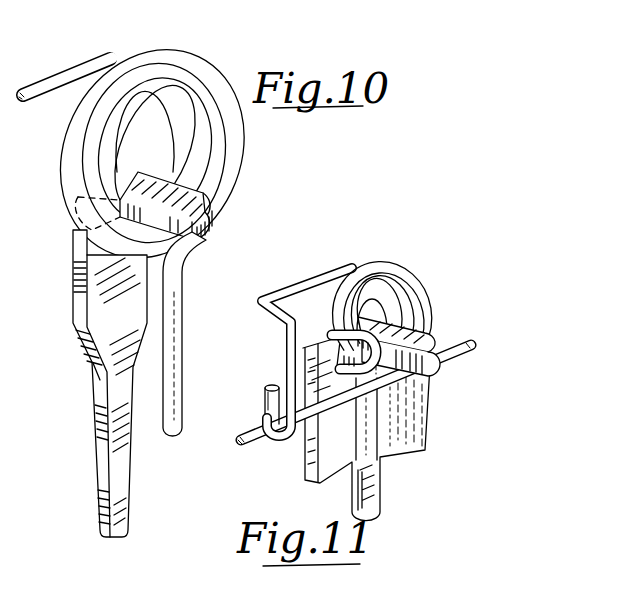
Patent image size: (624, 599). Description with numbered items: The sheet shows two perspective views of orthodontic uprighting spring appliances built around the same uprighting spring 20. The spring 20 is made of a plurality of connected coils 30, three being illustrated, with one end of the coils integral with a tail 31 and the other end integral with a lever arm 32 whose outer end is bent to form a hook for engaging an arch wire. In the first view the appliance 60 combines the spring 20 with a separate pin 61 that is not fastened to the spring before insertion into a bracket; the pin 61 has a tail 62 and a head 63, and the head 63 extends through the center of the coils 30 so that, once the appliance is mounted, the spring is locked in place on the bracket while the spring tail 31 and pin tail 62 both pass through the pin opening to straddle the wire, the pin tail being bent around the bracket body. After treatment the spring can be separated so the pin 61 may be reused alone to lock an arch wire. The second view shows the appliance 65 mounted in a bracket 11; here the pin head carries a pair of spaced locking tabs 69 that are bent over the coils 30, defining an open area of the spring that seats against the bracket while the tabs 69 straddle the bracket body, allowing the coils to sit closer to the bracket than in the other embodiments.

In FIG. 11, the mounting bracket 11 is at (302, 466).
In FIG. 10, the uprighting spring 20 is at (236, 135).
In FIG. 11, the uprighting spring 20 is at (424, 278).
In FIG. 10, the coils 30 is at (138, 53).
In FIG. 11, the coils 30 is at (383, 267).
In FIG. 10, the tail 31 is at (172, 316).
In FIG. 10, the lever arm 32 is at (47, 82).
In FIG. 10, the appliance 60 is at (203, 54).
In FIG. 10, the pin 61 is at (73, 318).
In FIG. 10, the tail 62 is at (100, 417).
In FIG. 10, the head 63 is at (202, 204).
In FIG. 11, the head 63 is at (399, 346).
In FIG. 11, the appliance 65 is at (411, 259).
In FIG. 11, the locking tabs 69 is at (438, 362).